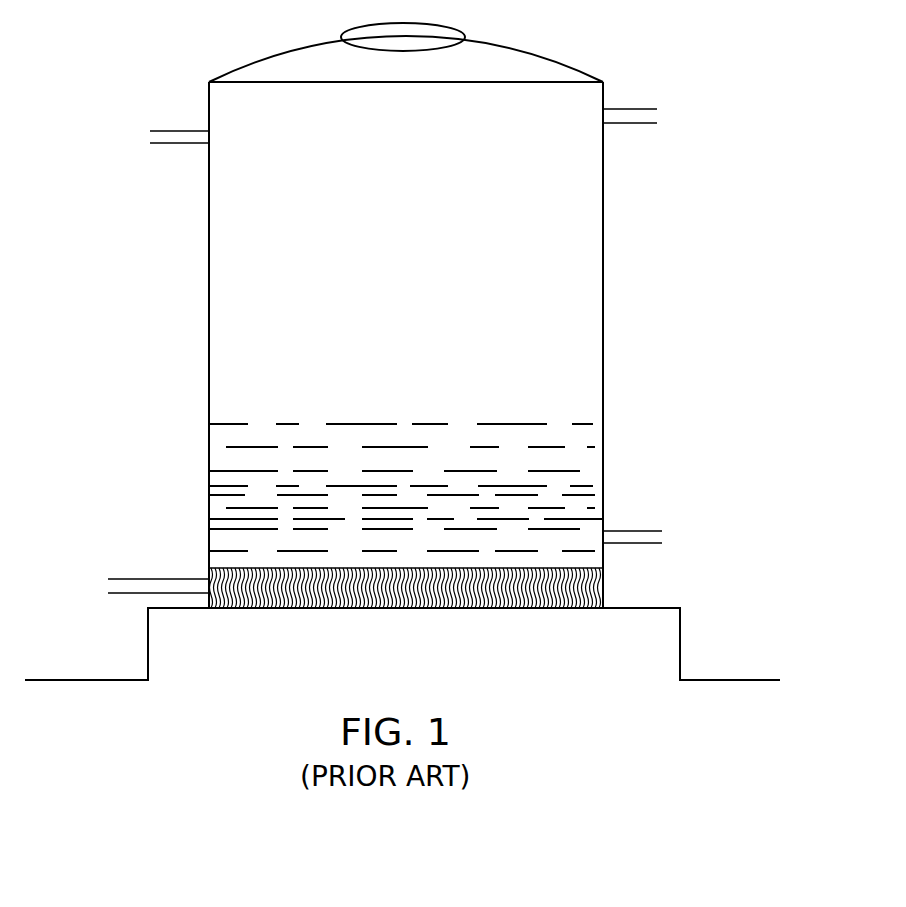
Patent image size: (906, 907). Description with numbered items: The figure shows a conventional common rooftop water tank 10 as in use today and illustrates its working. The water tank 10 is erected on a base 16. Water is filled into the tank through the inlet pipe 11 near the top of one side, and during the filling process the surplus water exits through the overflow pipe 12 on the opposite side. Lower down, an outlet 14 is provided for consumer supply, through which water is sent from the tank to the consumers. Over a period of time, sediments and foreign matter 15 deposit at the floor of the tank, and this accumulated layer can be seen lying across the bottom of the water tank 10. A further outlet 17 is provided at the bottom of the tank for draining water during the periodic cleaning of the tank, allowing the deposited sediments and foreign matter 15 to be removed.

The water tank 10 is at (603, 223).
The inlet pipe 11 is at (633, 109).
The overflow pipe 12 is at (175, 143).
The outlet 14 is at (637, 531).
The sediments and foreign matter 15 is at (552, 567).
The base 16 is at (680, 623).
The outlet 17 is at (147, 587).